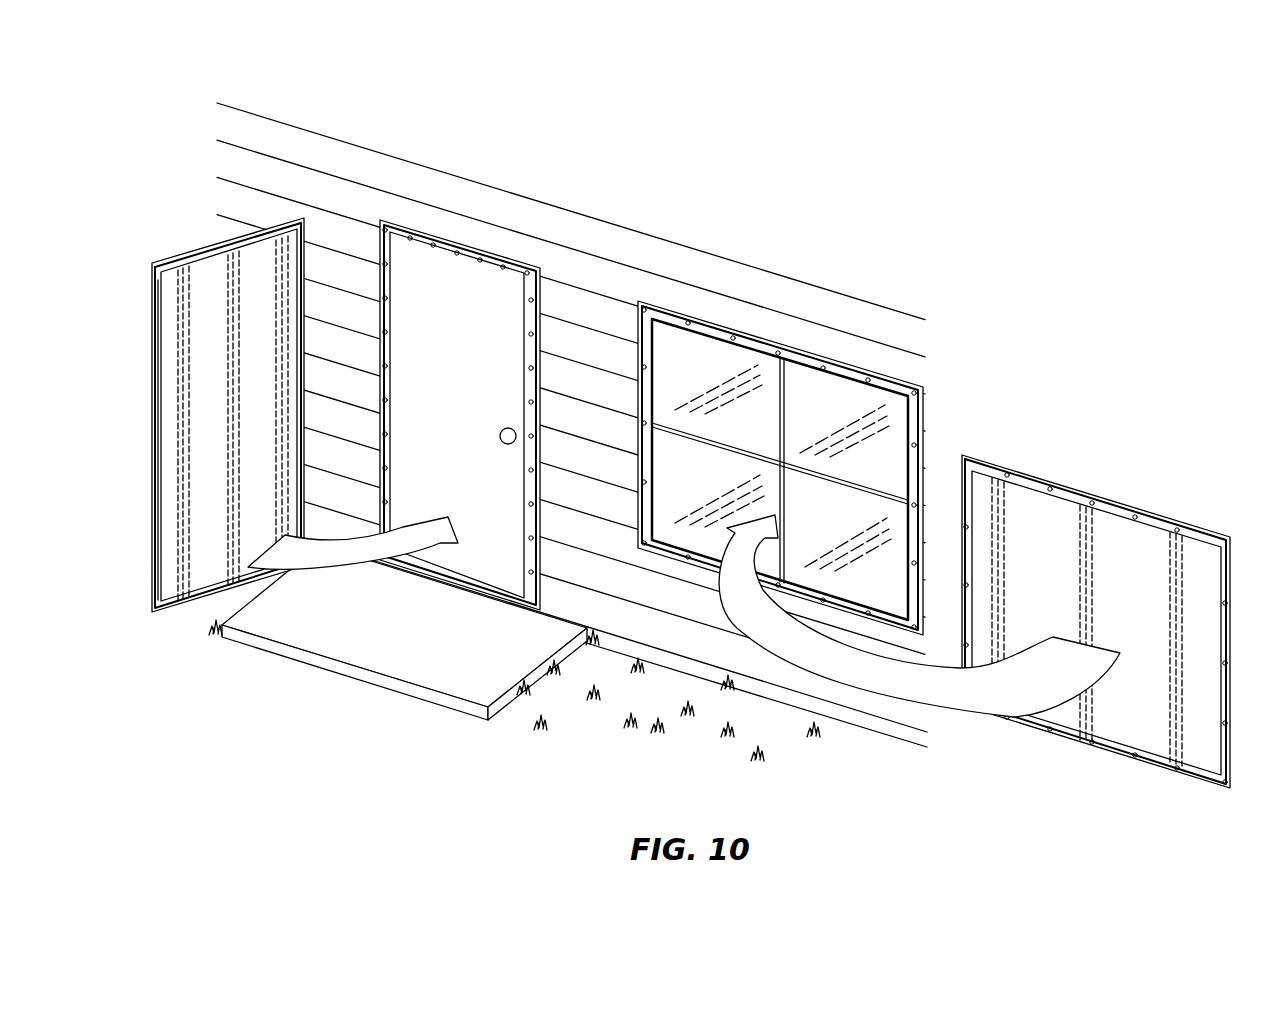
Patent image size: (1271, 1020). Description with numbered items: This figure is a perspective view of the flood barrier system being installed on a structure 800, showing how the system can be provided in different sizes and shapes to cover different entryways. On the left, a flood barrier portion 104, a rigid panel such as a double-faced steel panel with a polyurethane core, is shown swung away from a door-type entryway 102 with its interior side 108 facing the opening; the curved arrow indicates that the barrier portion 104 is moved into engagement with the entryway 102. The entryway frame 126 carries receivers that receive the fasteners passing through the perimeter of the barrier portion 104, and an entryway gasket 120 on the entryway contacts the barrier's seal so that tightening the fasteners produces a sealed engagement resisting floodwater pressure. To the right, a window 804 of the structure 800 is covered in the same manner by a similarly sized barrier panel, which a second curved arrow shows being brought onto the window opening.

The structure 800 is at (310, 144).
The entryway 102 is at (498, 381).
The flood barrier portion 104 is at (198, 405).
The interior side 108 is at (172, 512).
The entryway gasket 120 is at (532, 515).
The entryway frame 126 is at (527, 365).
The window 804 is at (912, 388).